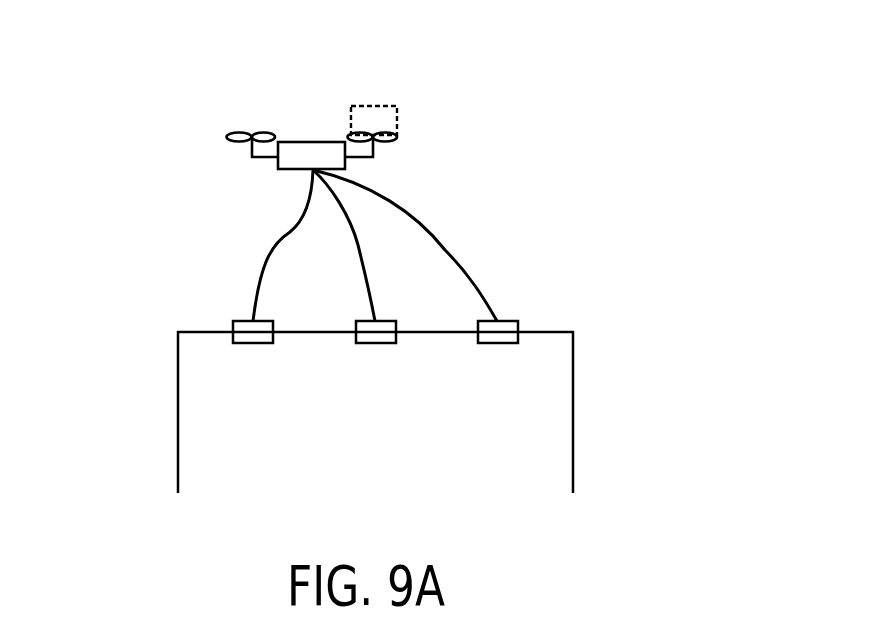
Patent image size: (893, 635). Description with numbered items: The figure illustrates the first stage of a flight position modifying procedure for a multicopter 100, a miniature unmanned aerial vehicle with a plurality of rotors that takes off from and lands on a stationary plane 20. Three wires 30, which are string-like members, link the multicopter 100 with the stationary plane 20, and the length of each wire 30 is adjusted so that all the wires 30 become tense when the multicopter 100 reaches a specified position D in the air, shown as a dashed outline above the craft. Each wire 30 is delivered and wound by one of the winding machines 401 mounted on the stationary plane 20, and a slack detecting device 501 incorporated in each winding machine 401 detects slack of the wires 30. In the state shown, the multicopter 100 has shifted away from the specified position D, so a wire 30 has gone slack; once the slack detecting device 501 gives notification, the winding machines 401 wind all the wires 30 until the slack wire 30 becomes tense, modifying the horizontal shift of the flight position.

The multicopter 100 is at (303, 142).
The specified position D is at (397, 107).
The wires 30 is at (447, 251).
The stationary plane 20 is at (210, 332).
The winding machines 401 is at (485, 392).
The slack detecting device 501 is at (258, 343).